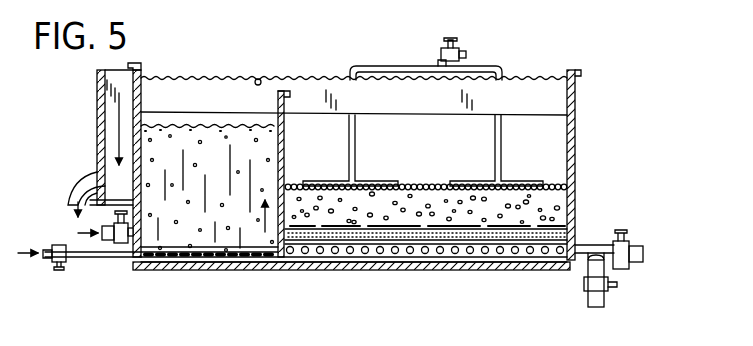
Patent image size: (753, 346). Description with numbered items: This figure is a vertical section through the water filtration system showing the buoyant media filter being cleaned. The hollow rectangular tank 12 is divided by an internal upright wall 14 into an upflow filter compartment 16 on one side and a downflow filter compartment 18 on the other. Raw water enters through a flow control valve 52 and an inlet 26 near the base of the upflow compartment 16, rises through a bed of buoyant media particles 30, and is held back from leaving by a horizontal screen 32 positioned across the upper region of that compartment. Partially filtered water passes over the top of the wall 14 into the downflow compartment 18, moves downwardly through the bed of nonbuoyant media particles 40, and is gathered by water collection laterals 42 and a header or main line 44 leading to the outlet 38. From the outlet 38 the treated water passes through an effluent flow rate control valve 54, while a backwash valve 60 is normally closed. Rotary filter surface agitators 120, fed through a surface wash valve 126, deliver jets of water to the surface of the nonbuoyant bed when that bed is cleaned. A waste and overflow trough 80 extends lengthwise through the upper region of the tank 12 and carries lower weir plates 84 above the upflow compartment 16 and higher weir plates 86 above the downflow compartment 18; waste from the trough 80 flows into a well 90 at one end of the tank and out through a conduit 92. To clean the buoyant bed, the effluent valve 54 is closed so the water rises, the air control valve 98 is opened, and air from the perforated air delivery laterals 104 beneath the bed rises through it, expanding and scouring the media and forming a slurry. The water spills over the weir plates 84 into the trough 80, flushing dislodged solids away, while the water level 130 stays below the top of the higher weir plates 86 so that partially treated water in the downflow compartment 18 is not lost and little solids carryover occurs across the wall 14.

The tank 12 is at (578, 182).
The internal upright wall 14 is at (285, 139).
The upflow filter compartment 16 is at (268, 246).
The downflow filter compartment 18 is at (556, 160).
The inlet 26 is at (140, 234).
The buoyant media particles 30 is at (225, 195).
The screen 32 is at (173, 125).
The outlet 38 is at (573, 245).
The nonbuoyant media particles 40 is at (433, 214).
The water collection laterals 42 is at (452, 254).
The header or main line 44 is at (370, 254).
The flow control valve 52 is at (121, 246).
The effluent flow rate control valve 54 is at (605, 292).
The backwash valve 60 is at (631, 241).
The waste and overflow trough 80 is at (548, 100).
The weir plates 84 is at (259, 79).
The weir plates 86 is at (535, 78).
The well 90 is at (97, 113).
The conduit 92 is at (75, 186).
The air control valve 98 is at (59, 272).
The perforated air delivery laterals 104 is at (213, 262).
The rotary filter surface agitators 120 is at (490, 145).
The surface wash valve 126 is at (458, 52).
The water level 130 is at (557, 72).